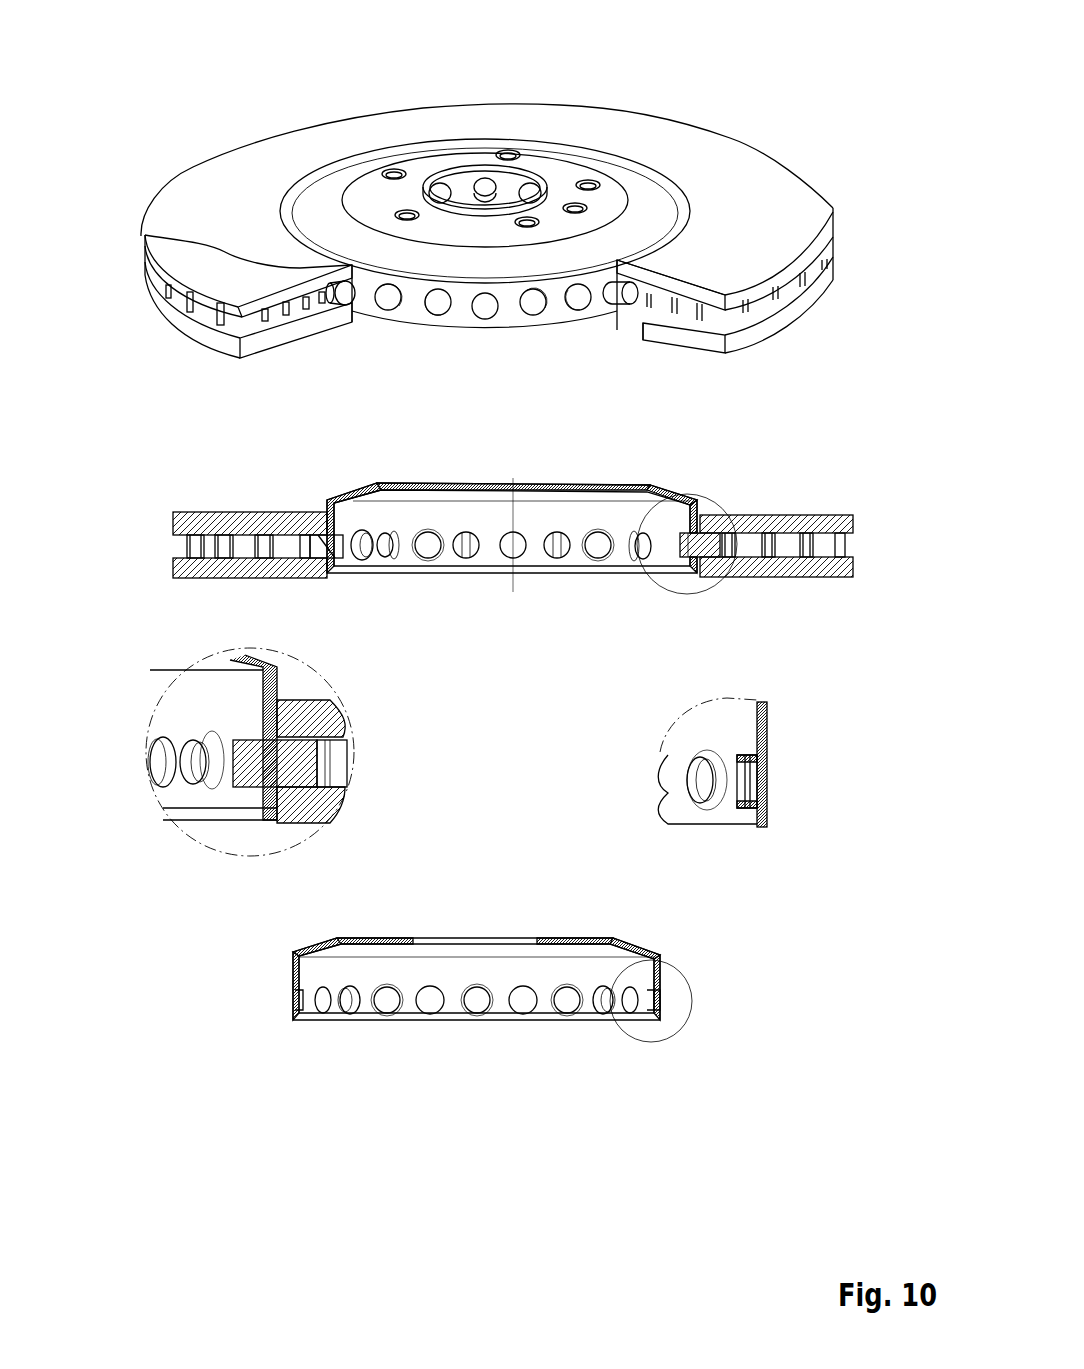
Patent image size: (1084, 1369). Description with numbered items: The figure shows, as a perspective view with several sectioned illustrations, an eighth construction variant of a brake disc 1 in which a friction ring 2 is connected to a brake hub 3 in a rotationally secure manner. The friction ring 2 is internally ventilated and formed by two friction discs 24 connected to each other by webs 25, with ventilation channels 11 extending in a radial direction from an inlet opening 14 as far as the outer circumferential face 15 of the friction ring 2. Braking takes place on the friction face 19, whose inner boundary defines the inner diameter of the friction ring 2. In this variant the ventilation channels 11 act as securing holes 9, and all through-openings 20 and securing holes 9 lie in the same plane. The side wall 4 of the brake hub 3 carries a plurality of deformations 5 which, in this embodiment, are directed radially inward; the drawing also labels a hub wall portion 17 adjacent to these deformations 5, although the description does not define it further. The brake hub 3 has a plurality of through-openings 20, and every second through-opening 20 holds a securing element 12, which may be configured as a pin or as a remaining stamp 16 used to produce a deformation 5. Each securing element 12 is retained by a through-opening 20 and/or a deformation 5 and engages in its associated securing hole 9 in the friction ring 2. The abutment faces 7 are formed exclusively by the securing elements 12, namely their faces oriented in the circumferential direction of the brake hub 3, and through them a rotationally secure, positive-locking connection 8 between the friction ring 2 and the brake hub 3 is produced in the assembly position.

The brake disc 1 is at (646, 62).
The friction ring 2 is at (805, 219).
The brake hub 3 is at (333, 191).
The side wall 4 is at (365, 277).
The deformation 5 is at (438, 193).
The abutment face 7 is at (604, 300).
The rotationally secure connection 8 is at (710, 518).
The securing hole 9 is at (587, 560).
The ventilation channel 11 is at (650, 333).
The securing element 12 is at (683, 552).
The inlet opening 14 is at (330, 307).
The outer circumferential face 15 is at (810, 303).
The remaining stamp 16 is at (630, 300).
The pot flange wall 17 is at (510, 320).
The friction face 19 is at (765, 171).
The through-opening 20 is at (482, 320).
The friction disc 24 is at (312, 140).
The web 25 is at (205, 545).